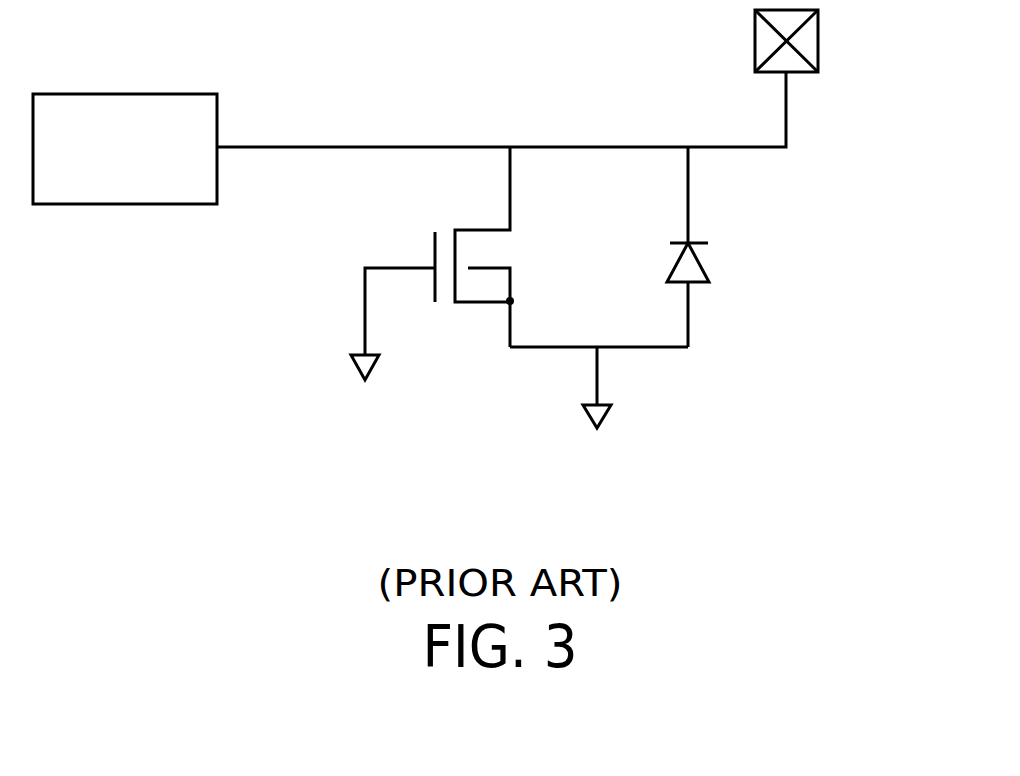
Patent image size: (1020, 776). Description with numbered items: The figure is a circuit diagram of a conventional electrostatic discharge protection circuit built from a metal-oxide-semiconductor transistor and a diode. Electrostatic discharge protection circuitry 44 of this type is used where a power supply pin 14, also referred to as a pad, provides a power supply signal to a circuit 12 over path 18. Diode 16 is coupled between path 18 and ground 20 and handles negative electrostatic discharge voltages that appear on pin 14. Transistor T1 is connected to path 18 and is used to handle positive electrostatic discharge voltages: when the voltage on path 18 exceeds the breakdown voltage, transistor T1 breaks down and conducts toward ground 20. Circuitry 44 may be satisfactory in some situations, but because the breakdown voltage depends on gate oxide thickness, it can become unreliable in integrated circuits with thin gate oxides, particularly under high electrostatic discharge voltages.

The circuit 12 is at (118, 94).
The power supply pin 14 is at (819, 38).
The diode 16 is at (722, 272).
The path 18 is at (613, 147).
The ground 20 is at (373, 370).
The electrostatic discharge protection circuitry 44 is at (320, 344).
The transistor T1 is at (497, 247).